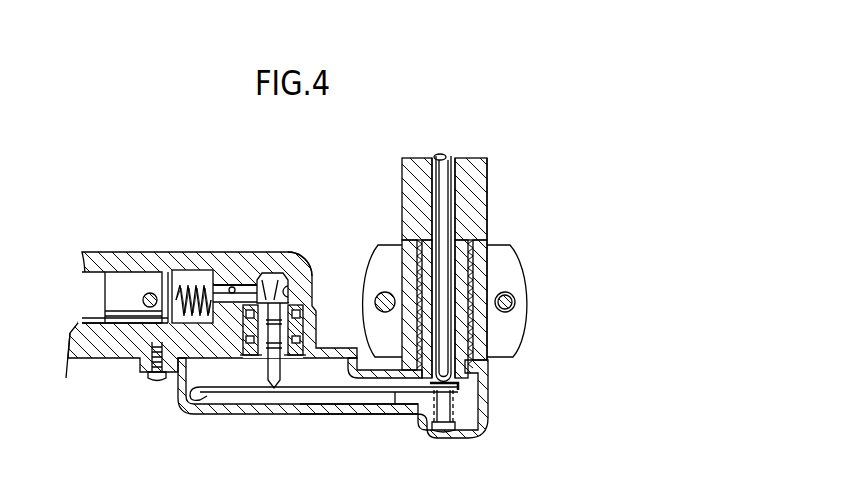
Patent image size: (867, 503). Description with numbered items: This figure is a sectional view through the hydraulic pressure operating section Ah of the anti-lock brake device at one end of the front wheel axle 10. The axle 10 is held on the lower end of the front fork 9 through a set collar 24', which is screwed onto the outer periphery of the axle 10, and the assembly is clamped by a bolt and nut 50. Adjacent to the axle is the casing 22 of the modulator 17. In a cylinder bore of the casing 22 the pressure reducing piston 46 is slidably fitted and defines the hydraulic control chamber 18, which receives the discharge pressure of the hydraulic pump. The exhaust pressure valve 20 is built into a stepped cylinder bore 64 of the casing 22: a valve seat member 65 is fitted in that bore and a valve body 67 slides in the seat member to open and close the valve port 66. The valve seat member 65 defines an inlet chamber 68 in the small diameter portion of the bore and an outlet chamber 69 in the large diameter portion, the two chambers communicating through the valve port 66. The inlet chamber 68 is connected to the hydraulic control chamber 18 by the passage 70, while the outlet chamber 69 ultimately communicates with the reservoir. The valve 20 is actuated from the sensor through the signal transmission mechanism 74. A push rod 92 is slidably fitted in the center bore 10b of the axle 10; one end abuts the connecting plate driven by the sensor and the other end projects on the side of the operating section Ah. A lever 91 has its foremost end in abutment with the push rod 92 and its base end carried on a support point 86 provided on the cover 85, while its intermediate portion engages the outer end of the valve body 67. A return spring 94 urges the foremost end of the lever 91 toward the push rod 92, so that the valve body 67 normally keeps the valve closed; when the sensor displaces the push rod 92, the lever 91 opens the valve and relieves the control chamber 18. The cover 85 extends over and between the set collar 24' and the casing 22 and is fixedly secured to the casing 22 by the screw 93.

The front fork 9 is at (507, 258).
The axle 10 is at (464, 166).
The center bore 10b is at (437, 174).
The modulator 17 is at (80, 302).
The hydraulic control chamber 18 is at (188, 280).
The exhaust pressure valve 20 is at (300, 281).
The casing 22 is at (148, 275).
The set collar 24' is at (507, 258).
The pressure reducing piston 46 is at (100, 283).
The bolt and nut 50 is at (515, 302).
The stepped cylinder bore 64 is at (284, 292).
The valve seat member 65 is at (297, 342).
The valve port 66 is at (268, 303).
The valve body 67 is at (273, 389).
The inlet chamber 68 is at (276, 278).
The outlet chamber 69 is at (243, 320).
The passage 70 is at (237, 286).
The signal transmission mechanism 74 is at (320, 392).
The cover 85 is at (362, 414).
The support point 86 is at (197, 414).
The lever 91 is at (395, 394).
The push rod 92 is at (443, 160).
The screw 93 is at (154, 381).
The return spring 94 is at (445, 431).
The hydraulic pressure operating section Ah is at (73, 333).